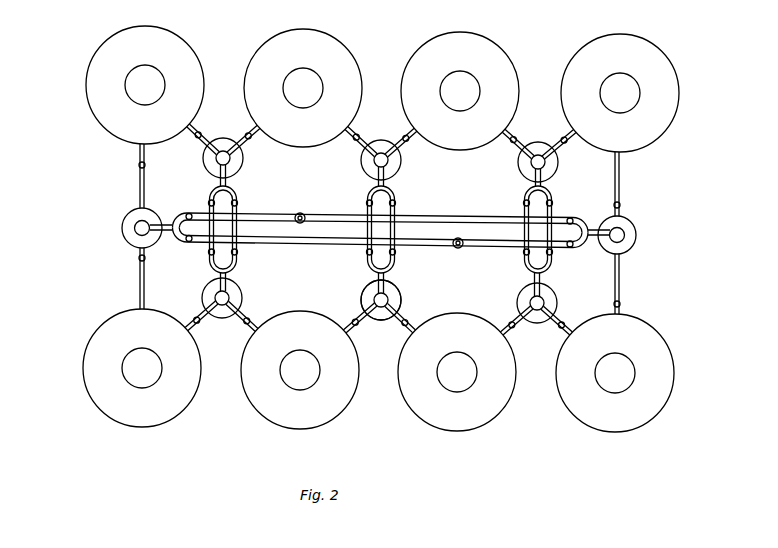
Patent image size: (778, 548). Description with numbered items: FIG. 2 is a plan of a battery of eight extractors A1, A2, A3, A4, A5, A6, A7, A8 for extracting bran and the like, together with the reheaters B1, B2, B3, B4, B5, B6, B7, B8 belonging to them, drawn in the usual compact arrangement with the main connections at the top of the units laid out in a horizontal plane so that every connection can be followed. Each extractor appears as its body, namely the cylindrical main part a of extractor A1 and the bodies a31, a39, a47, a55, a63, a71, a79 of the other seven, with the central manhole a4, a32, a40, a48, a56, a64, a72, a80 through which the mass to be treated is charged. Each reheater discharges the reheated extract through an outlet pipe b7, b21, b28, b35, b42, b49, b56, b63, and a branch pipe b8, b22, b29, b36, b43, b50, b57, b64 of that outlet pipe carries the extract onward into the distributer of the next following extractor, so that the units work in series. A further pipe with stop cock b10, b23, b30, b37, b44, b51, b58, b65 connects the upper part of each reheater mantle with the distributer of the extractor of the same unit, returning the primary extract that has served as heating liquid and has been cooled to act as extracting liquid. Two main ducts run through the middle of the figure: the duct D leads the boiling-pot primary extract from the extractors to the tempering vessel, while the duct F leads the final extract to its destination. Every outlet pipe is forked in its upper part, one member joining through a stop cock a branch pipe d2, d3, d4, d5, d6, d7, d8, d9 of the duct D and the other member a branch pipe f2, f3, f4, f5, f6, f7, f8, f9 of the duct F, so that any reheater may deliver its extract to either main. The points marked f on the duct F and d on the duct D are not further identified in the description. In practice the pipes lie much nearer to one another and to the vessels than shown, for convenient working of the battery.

The extractor A1 is at (129, 377).
The extractor A2 is at (302, 373).
The extractor A3 is at (453, 379).
The extractor A4 is at (626, 379).
The extractor A5 is at (642, 93).
The extractor A6 is at (475, 89).
The extractor A7 is at (319, 86).
The extractor A8 is at (129, 81).
The cylindrical main part a is at (157, 417).
The manhole a4 is at (142, 368).
The body a31 is at (348, 398).
The manhole a32 is at (300, 370).
The body a39 is at (492, 414).
The manhole a40 is at (457, 372).
The body a47 is at (657, 408).
The manhole a48 is at (615, 373).
The body a55 is at (679, 85).
The manhole a56 is at (620, 93).
The body a63 is at (510, 70).
The manhole a64 is at (460, 91).
The body a71 is at (358, 62).
The manhole a72 is at (303, 88).
The body a79 is at (93, 103).
The manhole a80 is at (145, 85).
The reheater B1 is at (224, 318).
The reheater B2 is at (383, 315).
The reheater B3 is at (542, 320).
The reheater B4 is at (629, 233).
The reheater B5 is at (535, 150).
The reheater B6 is at (379, 147).
The reheater B7 is at (219, 144).
The reheater B8 is at (135, 226).
The outlet pipe b7 is at (230, 275).
The branch pipe b8 is at (250, 326).
The pipe b10 is at (195, 318).
The outlet pipe b21 is at (397, 294).
The branch pipe b22 is at (407, 323).
The pipe b23 is at (352, 320).
The outlet pipe b28 is at (533, 281).
The branch pipe b29 is at (560, 323).
The pipe b30 is at (510, 323).
The outlet pipe b35 is at (593, 238).
The branch pipe b36 is at (621, 172).
The pipe b37 is at (621, 283).
The outlet pipe b42 is at (534, 185).
The branch pipe b43 is at (512, 144).
The pipe b44 is at (563, 145).
The outlet pipe b49 is at (377, 175).
The branch pipe b50 is at (354, 141).
The pipe b51 is at (408, 144).
The outlet pipe b56 is at (208, 170).
The branch pipe b57 is at (197, 141).
The pipe b58 is at (247, 150).
The outlet pipe b63 is at (158, 244).
The branch pipe b64 is at (140, 292).
The pipe b65 is at (140, 152).
The main duct D is at (333, 243).
The main duct F is at (448, 222).
The rail fitting d is at (458, 248).
The rail fitting f is at (300, 213).
The branch pipe d2 is at (208, 263).
The branch pipe d3 is at (369, 267).
The branch pipe d4 is at (526, 262).
The branch pipe d5 is at (572, 248).
The branch pipe d6 is at (525, 200).
The branch pipe d7 is at (368, 200).
The branch pipe d8 is at (210, 190).
The branch pipe d9 is at (189, 242).
The branch pipe f2 is at (238, 255).
The branch pipe f3 is at (394, 266).
The branch pipe f4 is at (551, 278).
The branch pipe f5 is at (574, 219).
The branch pipe f6 is at (551, 198).
The branch pipe f7 is at (394, 200).
The branch pipe f8 is at (237, 197).
The branch pipe f9 is at (188, 213).